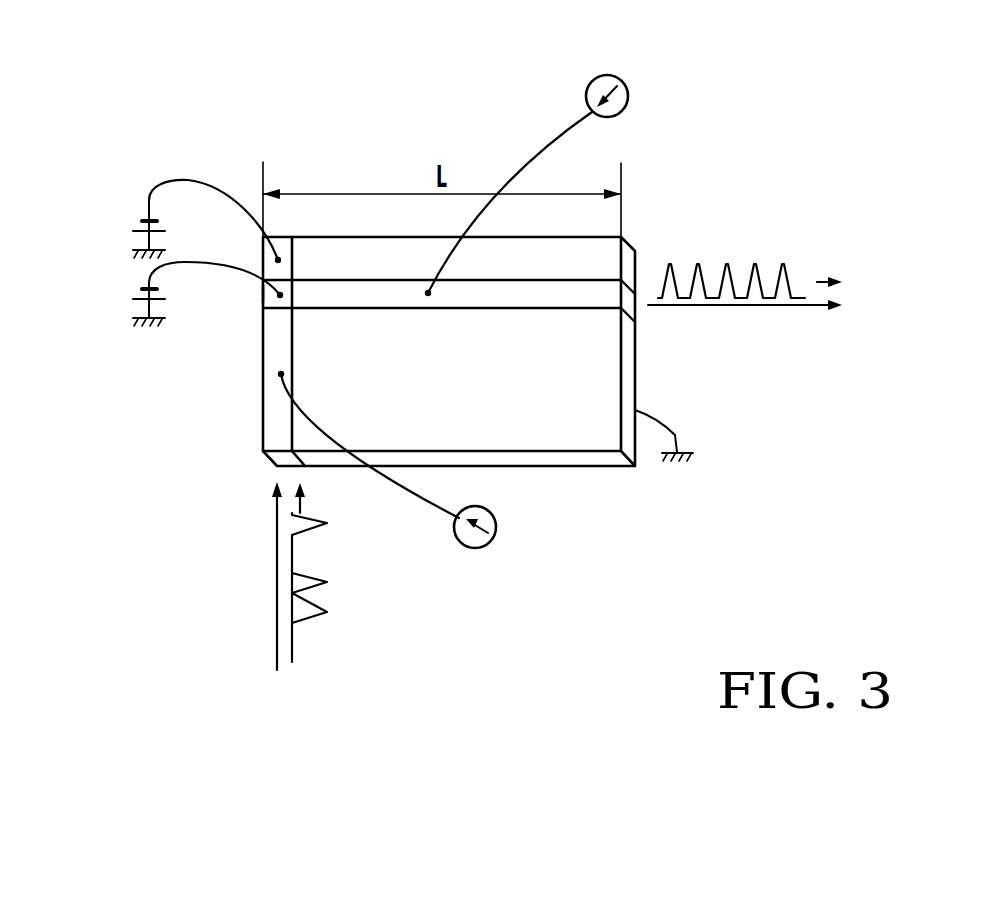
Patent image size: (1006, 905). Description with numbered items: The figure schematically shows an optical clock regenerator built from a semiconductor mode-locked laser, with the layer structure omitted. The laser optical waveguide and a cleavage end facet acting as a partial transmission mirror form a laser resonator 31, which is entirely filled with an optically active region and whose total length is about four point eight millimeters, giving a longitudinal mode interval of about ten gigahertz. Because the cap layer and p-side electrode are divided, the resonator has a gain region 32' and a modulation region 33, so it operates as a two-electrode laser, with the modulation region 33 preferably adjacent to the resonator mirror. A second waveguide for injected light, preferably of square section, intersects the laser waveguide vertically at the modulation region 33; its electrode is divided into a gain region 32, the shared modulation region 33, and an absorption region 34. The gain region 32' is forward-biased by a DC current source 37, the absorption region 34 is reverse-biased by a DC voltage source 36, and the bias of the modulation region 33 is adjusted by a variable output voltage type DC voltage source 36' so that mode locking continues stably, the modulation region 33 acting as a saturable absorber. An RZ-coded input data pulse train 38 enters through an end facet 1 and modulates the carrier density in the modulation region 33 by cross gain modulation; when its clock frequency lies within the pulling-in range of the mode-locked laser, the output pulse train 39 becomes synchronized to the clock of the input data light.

The end facet 1 is at (276, 467).
The laser resonator 31 is at (613, 317).
The gain region 32 is at (243, 344).
The gain region 32' is at (478, 233).
The modulation region 33 is at (263, 300).
The absorption region 34 is at (271, 182).
The DC voltage source 36 is at (187, 221).
The variable output voltage type DC voltage source 36' is at (185, 296).
The DC current source 37 is at (622, 81).
The input data pulse train 38 is at (325, 596).
The output pulse train 39 is at (810, 310).